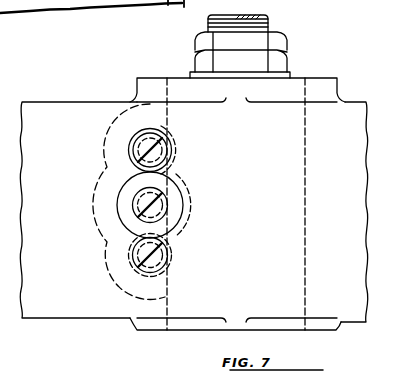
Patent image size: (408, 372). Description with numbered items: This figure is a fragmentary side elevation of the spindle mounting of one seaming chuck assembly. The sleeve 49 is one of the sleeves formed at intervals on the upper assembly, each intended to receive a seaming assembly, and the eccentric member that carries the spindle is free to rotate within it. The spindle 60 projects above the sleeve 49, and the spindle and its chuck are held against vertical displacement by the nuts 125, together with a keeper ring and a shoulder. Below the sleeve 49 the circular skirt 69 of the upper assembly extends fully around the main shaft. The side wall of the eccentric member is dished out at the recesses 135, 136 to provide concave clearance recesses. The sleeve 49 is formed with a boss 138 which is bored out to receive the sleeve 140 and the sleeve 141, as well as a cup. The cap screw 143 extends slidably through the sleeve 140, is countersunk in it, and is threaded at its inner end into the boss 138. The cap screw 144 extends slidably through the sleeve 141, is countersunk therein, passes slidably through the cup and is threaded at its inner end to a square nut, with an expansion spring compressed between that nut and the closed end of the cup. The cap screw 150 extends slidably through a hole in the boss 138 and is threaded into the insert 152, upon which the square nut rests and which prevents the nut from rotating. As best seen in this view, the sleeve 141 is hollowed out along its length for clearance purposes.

The sleeve 49 is at (322, 78).
The spindle 60 is at (263, 18).
The circular skirt 69 is at (194, 204).
The nuts 125 is at (198, 62).
The concave clearance recess 135 is at (172, 152).
The concave clearance recess 136 is at (187, 223).
The boss 138 is at (104, 147).
The sleeve 140 is at (177, 150).
The sleeve 141 is at (180, 207).
The cap screw 143 is at (165, 137).
The cap screw 144 is at (162, 193).
The cap screw 150 is at (158, 262).
The insert 152 is at (138, 256).